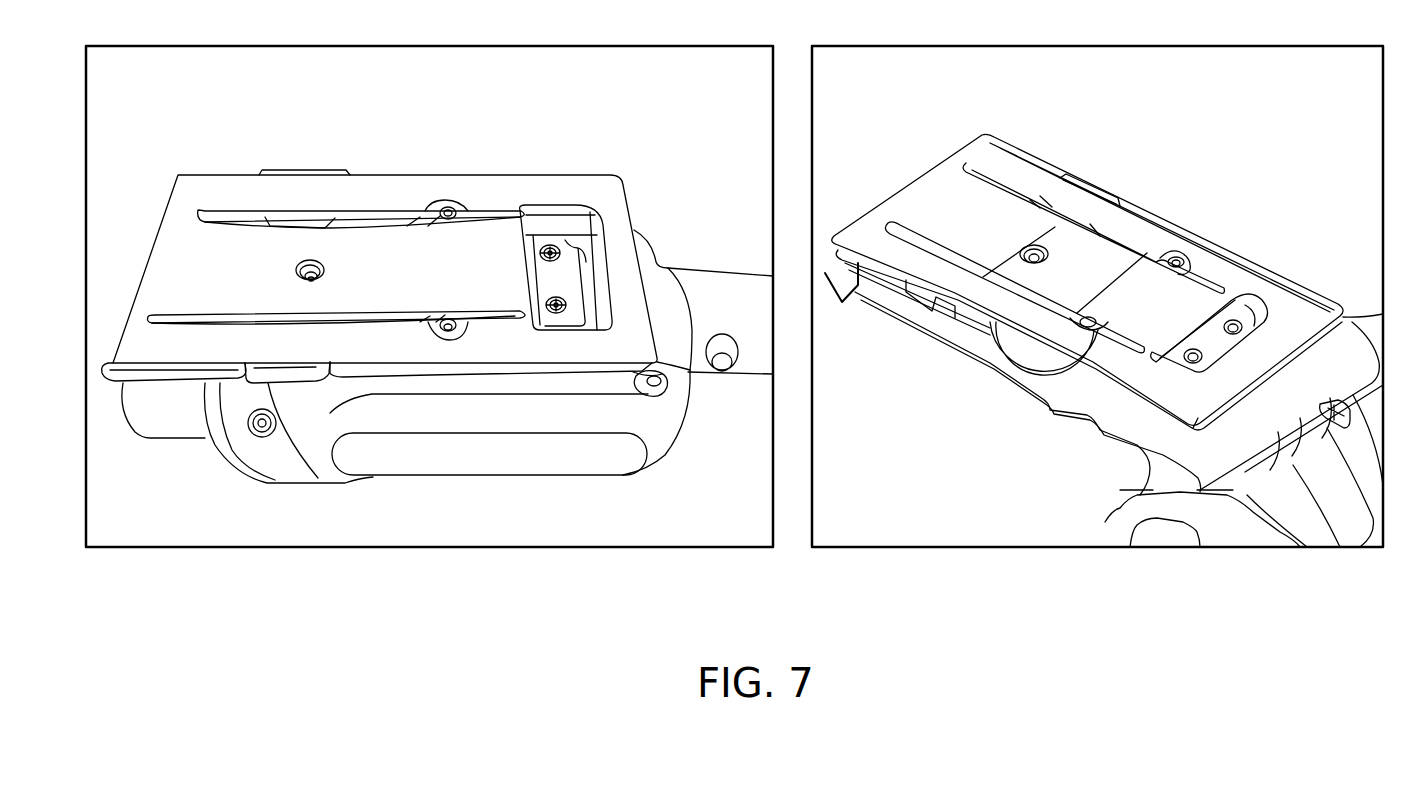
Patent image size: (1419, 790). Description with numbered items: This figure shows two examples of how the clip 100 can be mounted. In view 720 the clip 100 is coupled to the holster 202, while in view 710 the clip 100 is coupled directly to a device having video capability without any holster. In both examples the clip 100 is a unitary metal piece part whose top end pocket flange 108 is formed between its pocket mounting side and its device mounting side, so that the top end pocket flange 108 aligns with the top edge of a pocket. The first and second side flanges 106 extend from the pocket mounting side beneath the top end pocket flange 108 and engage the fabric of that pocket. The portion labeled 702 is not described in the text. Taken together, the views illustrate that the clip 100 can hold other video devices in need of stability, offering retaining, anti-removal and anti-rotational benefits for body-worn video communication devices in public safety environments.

The clip 100 is at (418, 175).
The first and second side flanges 106 is at (302, 175).
The top end pocket flange 108 is at (126, 372).
The holster 202 is at (990, 386).
The clamp block 702 is at (653, 262).
The view 710 is at (678, 113).
The view 720 is at (1288, 113).